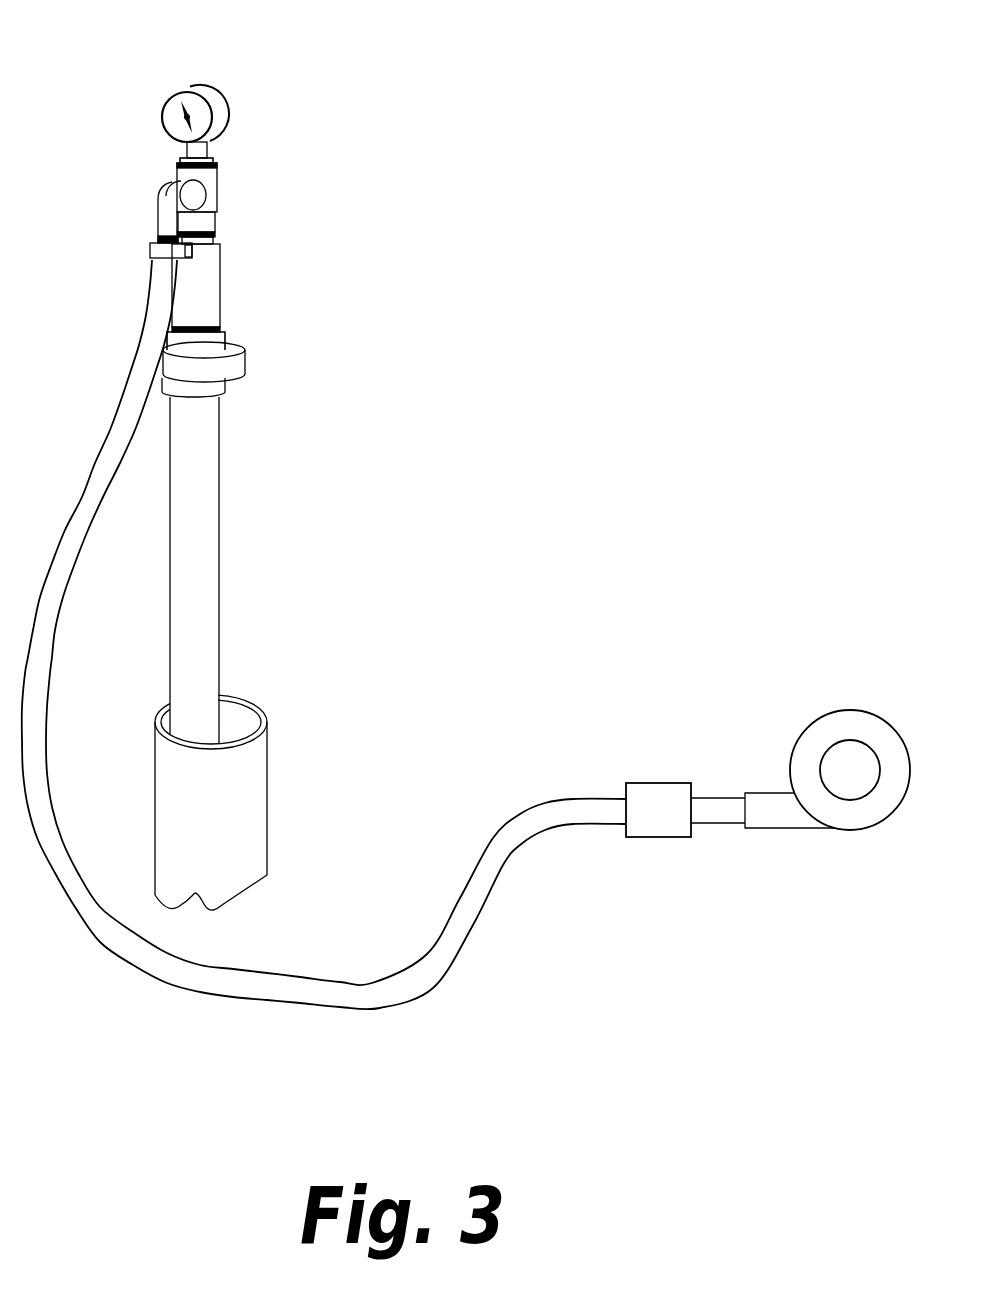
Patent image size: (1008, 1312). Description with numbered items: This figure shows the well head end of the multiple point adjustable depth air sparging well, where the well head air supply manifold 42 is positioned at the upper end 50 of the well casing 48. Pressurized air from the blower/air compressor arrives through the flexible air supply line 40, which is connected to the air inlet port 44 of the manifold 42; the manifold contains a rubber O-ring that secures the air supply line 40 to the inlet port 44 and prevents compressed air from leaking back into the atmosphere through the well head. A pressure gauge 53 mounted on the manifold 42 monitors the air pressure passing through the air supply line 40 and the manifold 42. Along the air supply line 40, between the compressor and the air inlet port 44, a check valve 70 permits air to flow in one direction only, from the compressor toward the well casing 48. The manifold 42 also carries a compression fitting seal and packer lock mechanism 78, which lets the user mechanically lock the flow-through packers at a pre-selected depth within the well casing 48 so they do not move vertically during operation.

The air supply line 40 is at (310, 997).
The well head air supply manifold 42 is at (232, 177).
The air inlet port 44 is at (158, 192).
The well casing 48 is at (242, 612).
The upper end of the well casing 50 is at (220, 533).
The pressure gauge 53 is at (215, 92).
The check valve 70 is at (659, 783).
The compression fitting seal and packer lock mechanism 78 is at (247, 360).